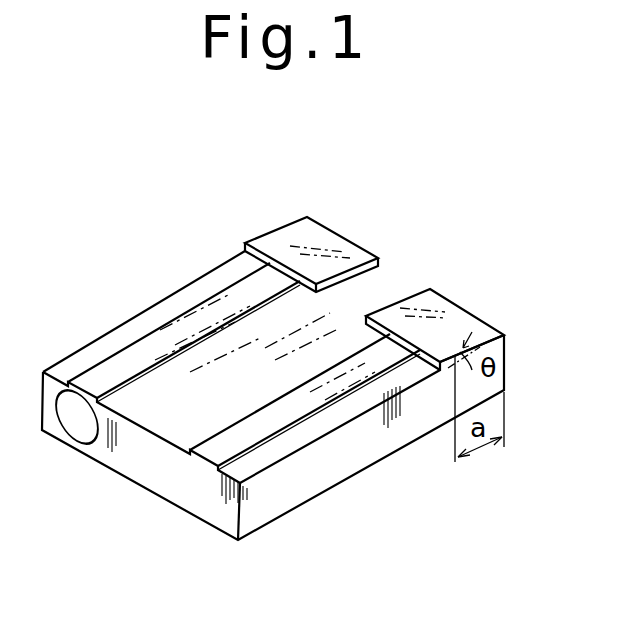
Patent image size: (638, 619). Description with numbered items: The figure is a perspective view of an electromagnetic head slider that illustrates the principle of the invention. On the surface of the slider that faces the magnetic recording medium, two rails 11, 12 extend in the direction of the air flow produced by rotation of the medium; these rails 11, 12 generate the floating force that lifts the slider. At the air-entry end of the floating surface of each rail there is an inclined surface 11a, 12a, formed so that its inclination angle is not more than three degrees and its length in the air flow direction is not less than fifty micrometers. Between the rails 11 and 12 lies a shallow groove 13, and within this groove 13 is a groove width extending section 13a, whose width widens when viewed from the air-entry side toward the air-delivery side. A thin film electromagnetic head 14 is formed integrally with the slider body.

The rail 11 is at (118, 366).
The rail 12 is at (303, 408).
The inclined surface 11a is at (296, 232).
The inclined surface 12a is at (463, 321).
The shallow groove 13 is at (252, 397).
The groove width extending section 13a is at (360, 300).
The thin film electromagnetic head 14 is at (74, 444).